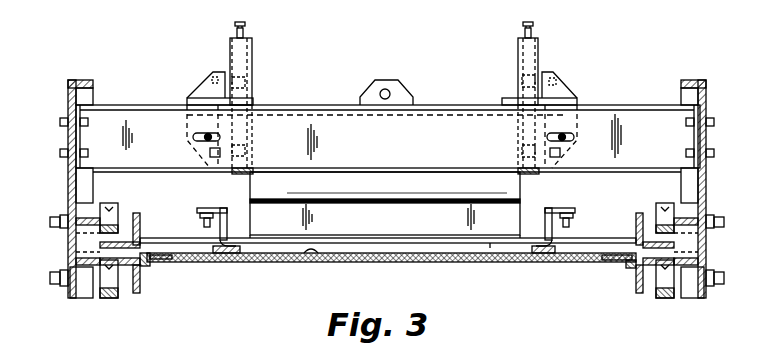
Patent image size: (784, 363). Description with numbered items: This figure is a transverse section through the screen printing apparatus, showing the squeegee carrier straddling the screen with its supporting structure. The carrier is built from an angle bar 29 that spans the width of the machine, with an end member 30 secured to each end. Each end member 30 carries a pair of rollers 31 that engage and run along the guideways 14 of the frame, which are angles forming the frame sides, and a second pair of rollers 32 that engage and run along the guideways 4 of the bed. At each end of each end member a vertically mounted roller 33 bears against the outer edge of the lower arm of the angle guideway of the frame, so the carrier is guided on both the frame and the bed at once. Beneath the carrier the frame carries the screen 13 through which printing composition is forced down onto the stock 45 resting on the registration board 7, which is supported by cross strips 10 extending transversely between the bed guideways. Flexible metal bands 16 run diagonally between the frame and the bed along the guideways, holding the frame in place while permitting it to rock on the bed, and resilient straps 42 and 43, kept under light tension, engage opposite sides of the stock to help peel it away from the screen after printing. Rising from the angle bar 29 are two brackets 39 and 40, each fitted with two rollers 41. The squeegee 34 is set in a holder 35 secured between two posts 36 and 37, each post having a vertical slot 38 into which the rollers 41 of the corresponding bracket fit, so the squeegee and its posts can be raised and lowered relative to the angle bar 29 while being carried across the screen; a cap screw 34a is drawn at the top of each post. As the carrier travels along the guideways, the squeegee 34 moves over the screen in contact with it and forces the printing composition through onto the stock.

The end member 30 is at (68, 93).
The angle bar 29 is at (648, 105).
The holder 35 is at (300, 115).
The post 36 is at (232, 47).
The post 37 is at (538, 43).
The cap screw 34a is at (245, 25).
The vertical slot 38 is at (236, 58).
The bracket 39 is at (190, 98).
The bracket 40 is at (577, 98).
The rollers 41 is at (252, 72).
The screen 13 is at (492, 245).
The cross strips 10 is at (555, 265).
The registration board 7 is at (182, 263).
The bands 16 is at (158, 255).
The strap 42 is at (215, 250).
The strap 43 is at (555, 250).
The stock 45 is at (310, 251).
The squeegee 34 is at (520, 220).
The guideways 14 is at (140, 222).
The guideways 4 is at (140, 288).
The rollers 31 is at (109, 203).
The rollers 32 is at (108, 298).
The roller 33 is at (68, 243).